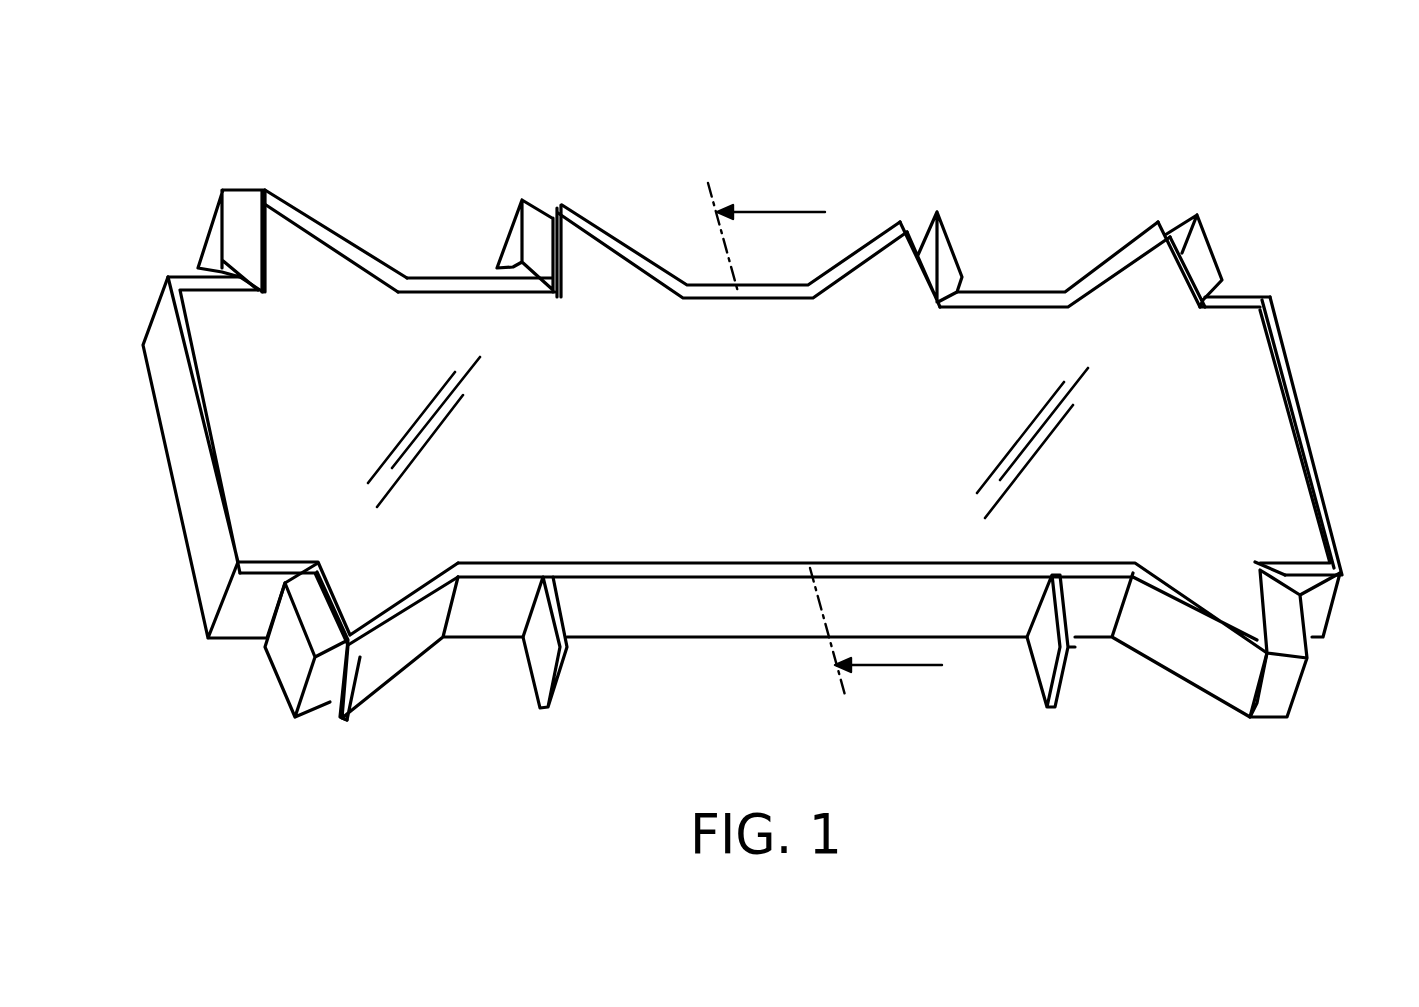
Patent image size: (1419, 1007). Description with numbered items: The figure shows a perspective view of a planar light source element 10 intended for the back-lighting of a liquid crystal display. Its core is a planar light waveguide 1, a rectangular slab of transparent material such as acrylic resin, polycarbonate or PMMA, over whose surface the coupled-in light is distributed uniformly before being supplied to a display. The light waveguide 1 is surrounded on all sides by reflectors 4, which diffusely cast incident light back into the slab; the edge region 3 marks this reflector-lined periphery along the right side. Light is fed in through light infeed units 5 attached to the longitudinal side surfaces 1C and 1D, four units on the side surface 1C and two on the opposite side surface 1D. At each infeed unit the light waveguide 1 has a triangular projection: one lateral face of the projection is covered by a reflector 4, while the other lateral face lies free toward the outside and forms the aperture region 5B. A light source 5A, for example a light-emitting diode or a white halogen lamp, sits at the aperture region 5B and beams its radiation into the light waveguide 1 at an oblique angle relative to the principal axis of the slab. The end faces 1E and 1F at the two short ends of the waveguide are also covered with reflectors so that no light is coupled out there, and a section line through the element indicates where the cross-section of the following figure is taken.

The light source element 10 is at (1202, 139).
The planar light waveguide 1 is at (720, 428).
The peripheral edge portion 3 is at (1288, 490).
The reflector 4 is at (363, 243).
The light infeed unit 5 is at (577, 195).
The light source 5A is at (538, 223).
The aperture region 5B is at (580, 262).
The longitudinal side surface 1C is at (1028, 292).
The longitudinal side surface 1D is at (683, 612).
The end face 1E is at (187, 445).
The end face 1F is at (1295, 383).